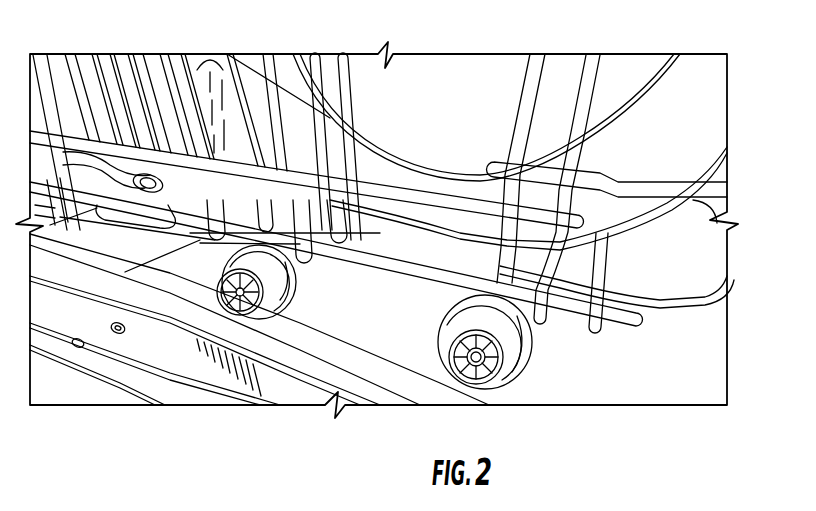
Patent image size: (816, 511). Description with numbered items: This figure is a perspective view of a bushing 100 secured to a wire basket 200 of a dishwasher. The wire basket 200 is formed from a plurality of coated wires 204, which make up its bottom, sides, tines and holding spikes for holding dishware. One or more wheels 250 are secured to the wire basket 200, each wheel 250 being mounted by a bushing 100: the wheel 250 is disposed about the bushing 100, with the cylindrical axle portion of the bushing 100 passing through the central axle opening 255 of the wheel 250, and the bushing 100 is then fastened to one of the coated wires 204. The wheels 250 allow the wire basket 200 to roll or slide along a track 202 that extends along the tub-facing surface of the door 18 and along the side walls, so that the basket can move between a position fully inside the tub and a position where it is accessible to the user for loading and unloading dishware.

The door 18 is at (190, 272).
The bushing 100 is at (484, 370).
The wire basket 200 is at (676, 187).
The track 202 is at (343, 353).
The coated wire 204 is at (487, 368).
The wheel 250 is at (533, 344).
The central axle opening 255 is at (466, 372).